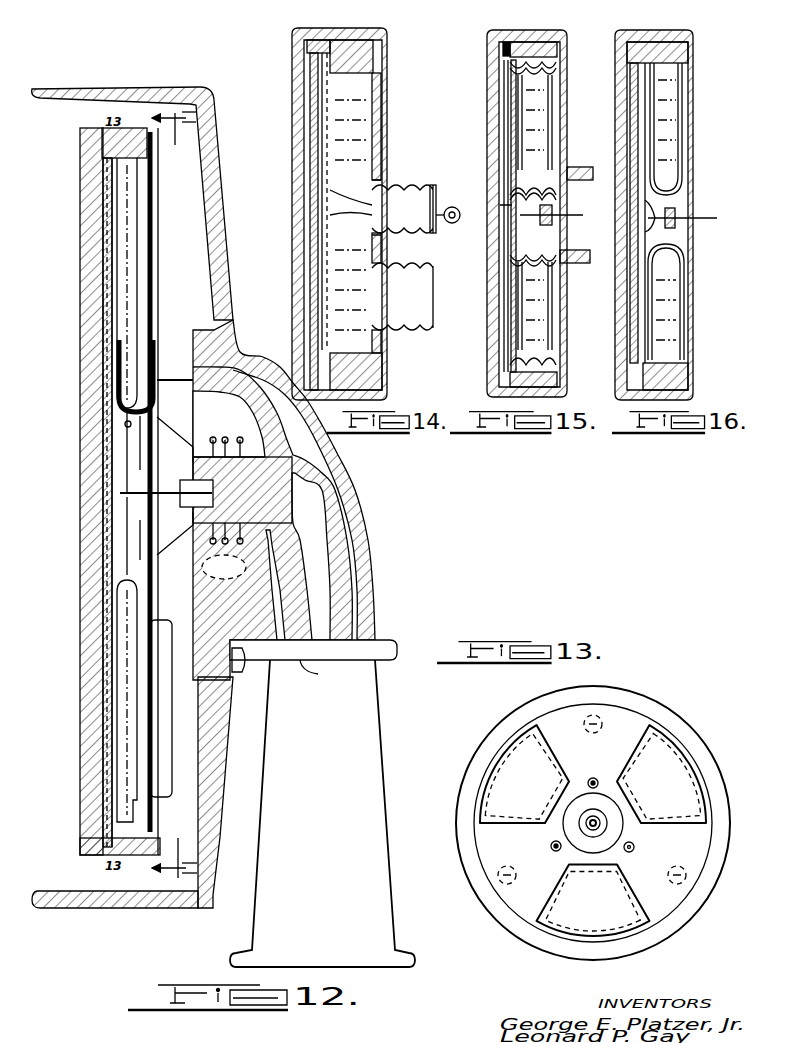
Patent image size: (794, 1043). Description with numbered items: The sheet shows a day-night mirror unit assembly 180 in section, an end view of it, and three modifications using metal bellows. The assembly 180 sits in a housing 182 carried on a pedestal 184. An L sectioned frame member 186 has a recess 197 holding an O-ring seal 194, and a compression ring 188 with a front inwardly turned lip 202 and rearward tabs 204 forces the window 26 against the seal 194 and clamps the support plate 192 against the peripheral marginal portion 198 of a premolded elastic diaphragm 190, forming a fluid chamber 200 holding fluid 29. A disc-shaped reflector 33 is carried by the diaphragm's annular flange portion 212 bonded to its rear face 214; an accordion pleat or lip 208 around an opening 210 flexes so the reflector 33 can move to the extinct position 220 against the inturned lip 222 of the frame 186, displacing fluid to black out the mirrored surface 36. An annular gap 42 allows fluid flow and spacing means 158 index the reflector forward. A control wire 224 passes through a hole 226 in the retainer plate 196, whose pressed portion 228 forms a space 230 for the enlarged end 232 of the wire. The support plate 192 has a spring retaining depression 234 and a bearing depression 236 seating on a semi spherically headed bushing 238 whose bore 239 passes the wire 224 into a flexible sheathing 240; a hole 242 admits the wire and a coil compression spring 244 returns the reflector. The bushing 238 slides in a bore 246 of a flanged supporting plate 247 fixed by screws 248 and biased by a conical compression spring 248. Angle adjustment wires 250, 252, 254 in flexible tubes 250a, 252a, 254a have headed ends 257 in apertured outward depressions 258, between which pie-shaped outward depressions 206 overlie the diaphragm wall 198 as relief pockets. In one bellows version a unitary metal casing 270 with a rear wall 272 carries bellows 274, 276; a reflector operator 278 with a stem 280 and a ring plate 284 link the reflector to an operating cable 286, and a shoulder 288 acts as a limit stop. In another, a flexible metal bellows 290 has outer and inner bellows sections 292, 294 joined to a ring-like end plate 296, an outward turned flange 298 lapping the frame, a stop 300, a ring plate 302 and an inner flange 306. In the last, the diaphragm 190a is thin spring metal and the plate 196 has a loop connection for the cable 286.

In FIG. 12, the window 26 is at (90, 336).
In FIG. 14, the window 26 is at (308, 232).
In FIG. 15, the window 26 is at (505, 95).
In FIG. 12, the fluid 29 is at (130, 702).
In FIG. 14, the fluid 29 is at (360, 95).
In FIG. 15, the fluid 29 is at (540, 120).
In FIG. 16, the fluid 29 is at (668, 288).
In FIG. 12, the reflector 33 is at (110, 650).
In FIG. 14, the reflector 33 is at (318, 280).
In FIG. 15, the reflector 33 is at (510, 130).
In FIG. 12, the mirrored surface 36 is at (105, 612).
In FIG. 14, the mirrored surface 36 is at (312, 105).
In FIG. 15, the mirrored surface 36 is at (512, 115).
In FIG. 12, the annular gap 42 is at (105, 162).
In FIG. 14, the annular gap 42 is at (318, 60).
In FIG. 15, the annular gap 42 is at (502, 75).
In FIG. 16, the annular gap 42 is at (660, 62).
In FIG. 12, the reflector spacing means 158 is at (104, 205).
In FIG. 14, the reflector spacing means 158 is at (310, 138).
In FIG. 13, the reflector spacing means 158 is at (598, 712).
In FIG. 12, the mirror unit assembly 180 is at (162, 268).
In FIG. 12, the housing 182 is at (201, 89).
In FIG. 12, the pedestal 184 is at (268, 908).
In FIG. 12, the L sectioned frame member 186 is at (158, 828).
In FIG. 15, the L sectioned frame member 186 is at (548, 36).
In FIG. 16, the L sectioned frame member 186 is at (672, 36).
In FIG. 12, the compression ring 188 is at (105, 858).
In FIG. 14, the compression ring 188 is at (366, 30).
In FIG. 15, the compression ring 188 is at (528, 32).
In FIG. 16, the compression ring 188 is at (658, 32).
In FIG. 12, the elastic diaphragm 190 is at (222, 688).
In FIG. 16, the spring metal diaphragm 190a is at (696, 158).
In FIG. 12, the mirror support and control mounting plate 192 is at (215, 751).
In FIG. 13, the mirror support and control mounting plate 192 is at (663, 905).
In FIG. 12, the O-ring seal 194 is at (105, 840).
In FIG. 14, the O-ring seal 194 is at (296, 40).
In FIG. 15, the O-ring seal 194 is at (500, 58).
In FIG. 12, the control cable retainer and mounting plate 196 is at (120, 452).
In FIG. 16, the control cable retainer and mounting plate 196 is at (650, 202).
In FIG. 12, the recess 197 is at (100, 147).
In FIG. 14, the recess 197 is at (315, 42).
In FIG. 12, the diaphragm wall 198 is at (156, 166).
In FIG. 12, the fluid receiving chamber 200 is at (135, 245).
In FIG. 14, the fluid receiving chamber 200 is at (360, 110).
In FIG. 15, the fluid receiving chamber 200 is at (553, 100).
In FIG. 12, the front inwardly turned lip 202 is at (80, 134).
In FIG. 14, the front inwardly turned lip 202 is at (292, 50).
In FIG. 15, the front inwardly turned lip 202 is at (490, 46).
In FIG. 12, the rearward tabs 204 is at (160, 150).
In FIG. 14, the rearward tabs 204 is at (386, 64).
In FIG. 15, the rearward tabs 204 is at (560, 44).
In FIG. 16, the rearward tabs 204 is at (690, 44).
In FIG. 13, the rearward tabs 204 is at (672, 718).
In FIG. 12, the pie-shaped outward depressions 206 is at (170, 752).
In FIG. 16, the pie-shaped outward depressions 206 is at (690, 130).
In FIG. 13, the pie-shaped outward depressions 206 is at (593, 830).
In FIG. 12, the pleat or lip 208 is at (124, 428).
In FIG. 12, the opening 210 is at (140, 436).
In FIG. 12, the annular flange portion 212 is at (115, 318).
In FIG. 16, the annular flange portion 212 is at (660, 110).
In FIG. 12, the rear face of reflector 214 is at (155, 738).
In FIG. 12, the night position 220 is at (135, 205).
In FIG. 12, the inturned lip 222 is at (150, 178).
In FIG. 12, the control wire 224 is at (150, 502).
In FIG. 13, the control wire 224 is at (598, 820).
In FIG. 12, the hole 226 is at (160, 494).
In FIG. 12, the outwardly pressed portion 228 is at (135, 468).
In FIG. 12, the space 230 is at (118, 493).
In FIG. 12, the enlarged end of wire 232 is at (125, 497).
In FIG. 12, the spring retaining depression 234 is at (272, 503).
In FIG. 12, the bearing depression 236 is at (130, 547).
In FIG. 12, the semi spherically headed bushing 238 is at (330, 482).
In FIG. 12, the bore 239 is at (236, 490).
In FIG. 12, the flexible sheathing 240 is at (370, 553).
In FIG. 12, the hole 242 is at (145, 510).
In FIG. 12, the coil compression spring 244 is at (130, 562).
In FIG. 12, the bore 246 is at (286, 585).
In FIG. 12, the flanged supporting plate 247 is at (200, 575).
In FIG. 12, the screws 248 is at (232, 455).
In FIG. 12, the angle adjustment wire 250 is at (176, 378).
In FIG. 13, the angle adjustment wire 250 is at (596, 777).
In FIG. 12, the flexible tube 250a is at (362, 578).
In FIG. 12, the angle adjustment wire 252 is at (224, 567).
In FIG. 13, the angle adjustment wire 252 is at (635, 846).
In FIG. 12, the flexible tube 252a is at (360, 602).
In FIG. 13, the angle adjustment wire 254 is at (550, 845).
In FIG. 12, the flexible tube 254a is at (326, 669).
In FIG. 12, the headed ends 257 is at (150, 385).
In FIG. 12, the apertured outward depressions 258 is at (150, 376).
In FIG. 13, the apertured outward depressions 258 is at (550, 850).
In FIG. 14, the unitary metal casing 270 is at (340, 62).
In FIG. 14, the rear wall 272 is at (384, 125).
In FIG. 14, the bellows 274 is at (384, 165).
In FIG. 14, the bellows 276 is at (438, 300).
In FIG. 15, the bellows 276 is at (505, 340).
In FIG. 14, the reflector operator 278 is at (370, 285).
In FIG. 14, the stem 280 is at (350, 205).
In FIG. 15, the ring plate 284 is at (525, 238).
In FIG. 14, the operating cable 286 is at (458, 207).
In FIG. 15, the operating cable 286 is at (485, 215).
In FIG. 16, the operating cable 286 is at (714, 217).
In FIG. 14, the shoulder 288 is at (370, 36).
In FIG. 15, the flexible metal bellows 290 is at (556, 142).
In FIG. 15, the outer bellows section 292 is at (554, 72).
In FIG. 15, the inner bellows section 294 is at (556, 242).
In FIG. 15, the ring-like end plate 296 is at (556, 296).
In FIG. 15, the outward turned flange 298 is at (506, 368).
In FIG. 15, the stop 300 is at (574, 264).
In FIG. 15, the ring plate 302 is at (530, 252).
In FIG. 15, the inner flange 306 is at (522, 268).